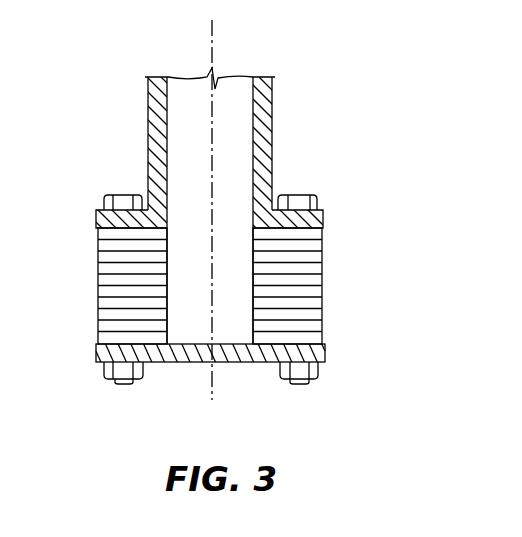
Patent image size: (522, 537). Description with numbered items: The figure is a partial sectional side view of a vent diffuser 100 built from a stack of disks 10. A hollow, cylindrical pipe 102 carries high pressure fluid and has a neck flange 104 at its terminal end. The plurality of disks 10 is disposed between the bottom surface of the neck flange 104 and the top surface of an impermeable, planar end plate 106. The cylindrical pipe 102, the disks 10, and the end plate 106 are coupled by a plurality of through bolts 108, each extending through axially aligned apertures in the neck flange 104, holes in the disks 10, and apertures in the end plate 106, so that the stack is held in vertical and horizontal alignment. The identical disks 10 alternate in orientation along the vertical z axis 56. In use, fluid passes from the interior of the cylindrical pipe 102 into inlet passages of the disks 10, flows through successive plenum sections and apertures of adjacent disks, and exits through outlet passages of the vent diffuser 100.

The vertical z axis 56 is at (212, 35).
The vent diffuser 100 is at (392, 140).
The cylindrical pipe 102 is at (157, 135).
The neck flange 104 is at (320, 218).
The end plate 106 is at (322, 352).
The through bolt 108 is at (104, 198).
The disk 10 is at (334, 272).